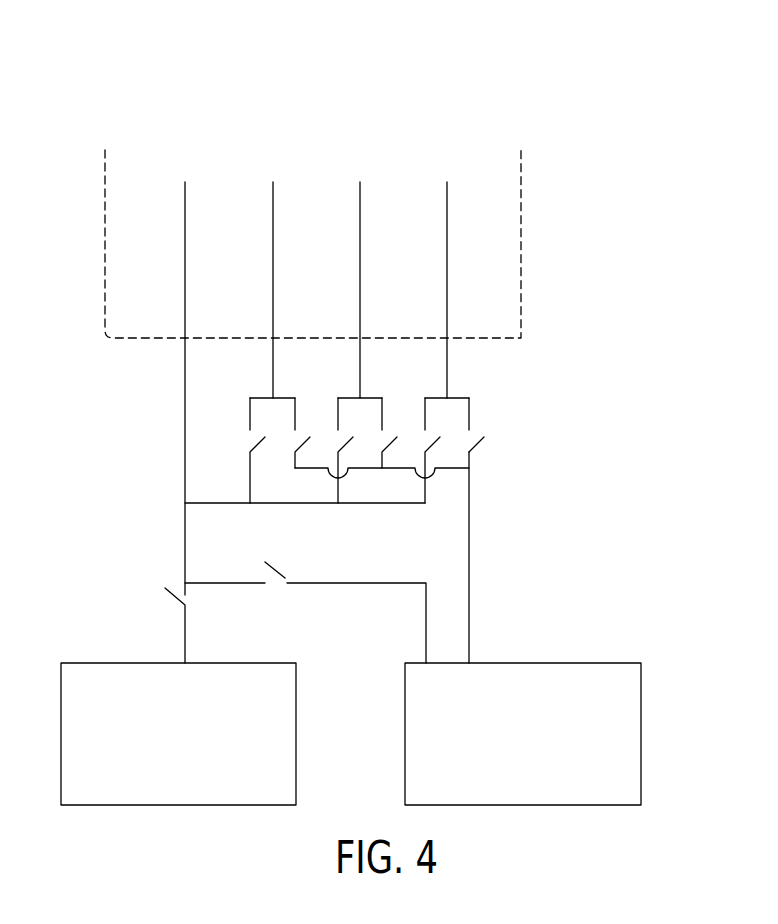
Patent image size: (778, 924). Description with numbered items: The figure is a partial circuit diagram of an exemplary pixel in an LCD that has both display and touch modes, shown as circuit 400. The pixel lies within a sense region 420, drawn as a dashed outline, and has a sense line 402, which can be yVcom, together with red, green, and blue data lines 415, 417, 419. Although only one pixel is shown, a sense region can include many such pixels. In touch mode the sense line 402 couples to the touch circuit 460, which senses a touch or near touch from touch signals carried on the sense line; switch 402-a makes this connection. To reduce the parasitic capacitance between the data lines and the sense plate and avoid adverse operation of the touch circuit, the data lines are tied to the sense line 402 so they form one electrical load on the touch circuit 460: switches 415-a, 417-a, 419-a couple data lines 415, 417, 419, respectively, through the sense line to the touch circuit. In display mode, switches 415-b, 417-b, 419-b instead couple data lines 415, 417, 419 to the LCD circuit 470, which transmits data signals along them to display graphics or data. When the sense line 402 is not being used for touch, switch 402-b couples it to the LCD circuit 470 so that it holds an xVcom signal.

The circuit 400 is at (552, 96).
The sense region 420 is at (521, 247).
The sense line 402 is at (185, 199).
The red data line 415 is at (273, 199).
The green data line 417 is at (360, 199).
The blue data line 419 is at (447, 199).
The switch 415-a is at (250, 503).
The switch 415-b is at (295, 460).
The switch 417-a is at (338, 503).
The switch 417-b is at (382, 460).
The switch 419-a is at (425, 503).
The switch 419-b is at (469, 460).
The switch 402-a is at (177, 603).
The switch 402-b is at (280, 585).
The touch circuit 460 is at (296, 732).
The LCD circuit 470 is at (641, 732).